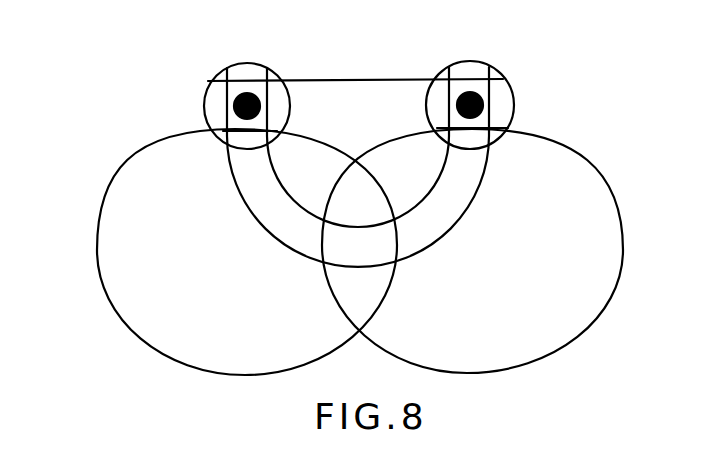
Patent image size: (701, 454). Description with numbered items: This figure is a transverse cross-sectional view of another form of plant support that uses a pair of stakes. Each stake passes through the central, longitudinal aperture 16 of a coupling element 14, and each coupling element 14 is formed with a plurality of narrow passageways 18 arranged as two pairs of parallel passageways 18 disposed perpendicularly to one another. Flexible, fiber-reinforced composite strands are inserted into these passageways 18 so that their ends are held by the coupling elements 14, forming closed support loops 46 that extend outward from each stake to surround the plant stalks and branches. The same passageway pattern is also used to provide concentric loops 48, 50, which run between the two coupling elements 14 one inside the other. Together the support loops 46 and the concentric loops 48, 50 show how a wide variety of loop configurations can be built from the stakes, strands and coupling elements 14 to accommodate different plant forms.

The coupling element 14 is at (283, 105).
The central longitudinal aperture 16 is at (247, 92).
The narrow passageways 18 is at (272, 72).
The support loops 46 is at (98, 268).
The concentric loop 48 is at (440, 180).
The concentric loop 50 is at (487, 203).